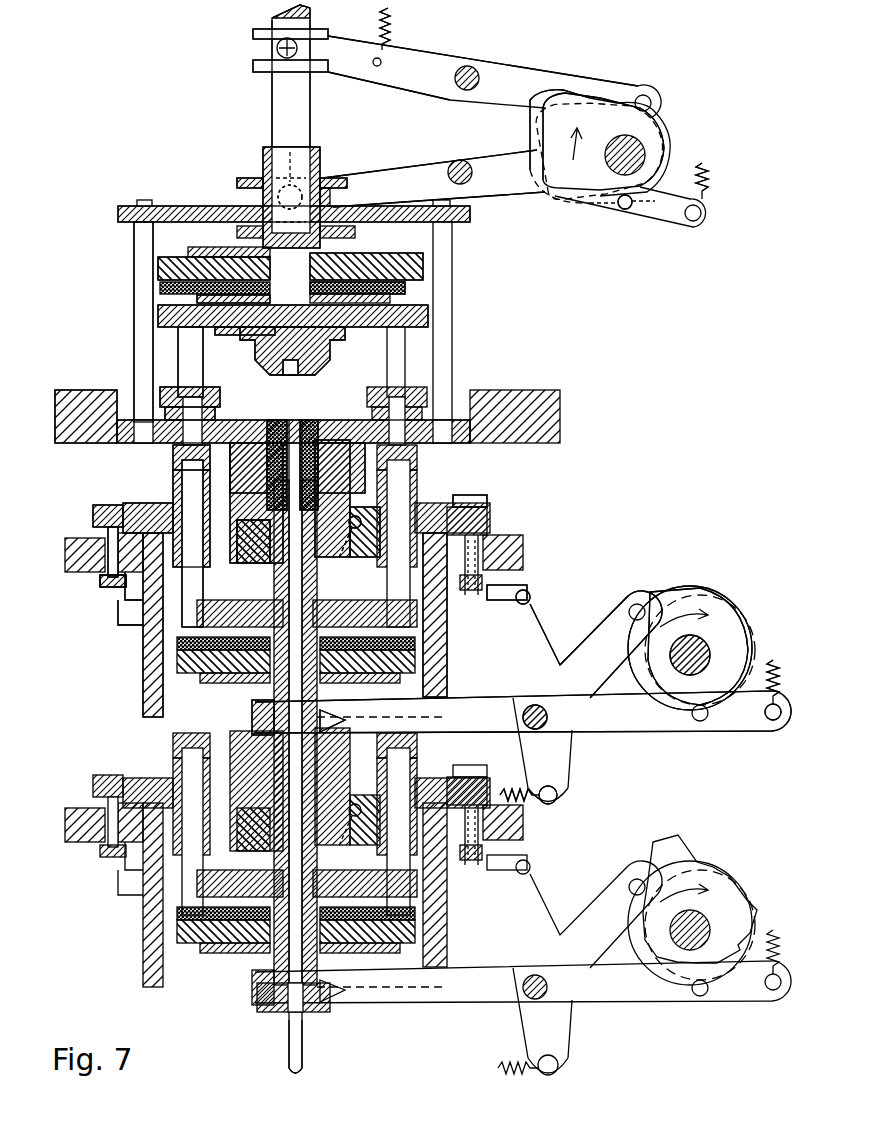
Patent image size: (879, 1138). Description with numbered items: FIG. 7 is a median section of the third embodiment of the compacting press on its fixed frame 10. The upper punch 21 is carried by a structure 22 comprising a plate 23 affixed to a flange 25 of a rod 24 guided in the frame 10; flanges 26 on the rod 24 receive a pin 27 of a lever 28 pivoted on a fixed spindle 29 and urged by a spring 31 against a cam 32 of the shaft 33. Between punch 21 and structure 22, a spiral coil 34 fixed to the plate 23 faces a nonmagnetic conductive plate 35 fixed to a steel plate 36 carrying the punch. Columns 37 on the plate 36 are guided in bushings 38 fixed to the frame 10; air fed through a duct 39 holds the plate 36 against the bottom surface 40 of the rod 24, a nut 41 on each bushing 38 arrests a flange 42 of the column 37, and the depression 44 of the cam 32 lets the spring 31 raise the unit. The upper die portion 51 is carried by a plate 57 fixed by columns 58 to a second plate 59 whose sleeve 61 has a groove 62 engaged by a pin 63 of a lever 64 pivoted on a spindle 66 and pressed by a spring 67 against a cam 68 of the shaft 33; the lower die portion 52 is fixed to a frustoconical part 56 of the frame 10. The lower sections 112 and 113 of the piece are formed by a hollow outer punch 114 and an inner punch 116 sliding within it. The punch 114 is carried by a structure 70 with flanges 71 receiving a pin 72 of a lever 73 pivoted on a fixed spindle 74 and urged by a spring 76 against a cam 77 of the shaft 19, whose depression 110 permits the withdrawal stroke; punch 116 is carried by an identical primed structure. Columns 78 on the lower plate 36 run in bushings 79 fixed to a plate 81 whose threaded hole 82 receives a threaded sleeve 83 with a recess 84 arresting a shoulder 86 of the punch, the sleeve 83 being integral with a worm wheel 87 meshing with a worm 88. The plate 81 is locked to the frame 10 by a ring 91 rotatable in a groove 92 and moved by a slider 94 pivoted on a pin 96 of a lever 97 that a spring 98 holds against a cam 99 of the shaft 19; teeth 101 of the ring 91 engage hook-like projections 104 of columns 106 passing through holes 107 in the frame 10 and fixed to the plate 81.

The fixed frame 10 is at (72, 400).
The shaft 19 is at (705, 645).
The ram 21 is at (275, 362).
The structure 22 is at (209, 230).
The plate 23 is at (355, 265).
The rod 24 is at (278, 91).
The flange 25 is at (395, 255).
The flanges 26 is at (254, 64).
The pin 27 is at (268, 15).
The lever 28 is at (445, 60).
The fixed spindle 29 is at (472, 70).
The spring 31 is at (390, 22).
The cam 32 is at (660, 125).
The shaft 33 is at (645, 155).
The coil 34 is at (405, 289).
The plate 35 is at (195, 297).
The steel plate 36 is at (358, 330).
The columns 37 is at (190, 355).
The bushings 38 is at (160, 410).
The duct 39 is at (175, 467).
The bottom surface 40 is at (265, 320).
The nut 41 is at (165, 388).
The flange 42 is at (170, 322).
The depression 44 is at (530, 158).
The die portion 51 is at (338, 440).
The die portion 52 is at (245, 525).
The frustoconical part 56 is at (470, 497).
The plate 57 is at (470, 442).
The columns 58 is at (135, 238).
The second plate 59 is at (160, 206).
The sleeve 61 is at (262, 184).
The groove 62 is at (328, 182).
The pin 63 is at (290, 183).
The lever 64 is at (412, 165).
The spindle 66 is at (460, 160).
The spring 67 is at (704, 172).
The cam 68 is at (590, 207).
The structure 70 is at (217, 705).
The flanges 71 is at (348, 720).
The pin 72 is at (287, 1040).
The lever 73 is at (487, 710).
The fixed spindle 74 is at (535, 705).
The spring 76 is at (773, 658).
The cam 77 is at (688, 610).
The columns 78 is at (195, 545).
The bushings 79 is at (175, 515).
The plate 81 is at (135, 515).
The threaded hole 82 is at (258, 522).
The sleeve 83 is at (335, 525).
The recess 84 is at (250, 600).
The shoulder 86 is at (336, 562).
The worm wheel 87 is at (366, 550).
The worm 88 is at (357, 516).
The ring 91 is at (128, 620).
The groove 92 is at (440, 628).
The slider 94 is at (500, 590).
The pin 96 is at (530, 597).
The lever 97 is at (545, 640).
The spring 98 is at (548, 786).
The cam 99 is at (625, 692).
The teeth 101 is at (110, 600).
The hook-like projection 104 is at (118, 612).
The column 106 is at (100, 535).
The hole 107 is at (105, 585).
The depression 110 is at (742, 628).
The section 112 is at (310, 440).
The section 113 is at (277, 440).
The punch 114 is at (230, 440).
The punch 116 is at (272, 740).